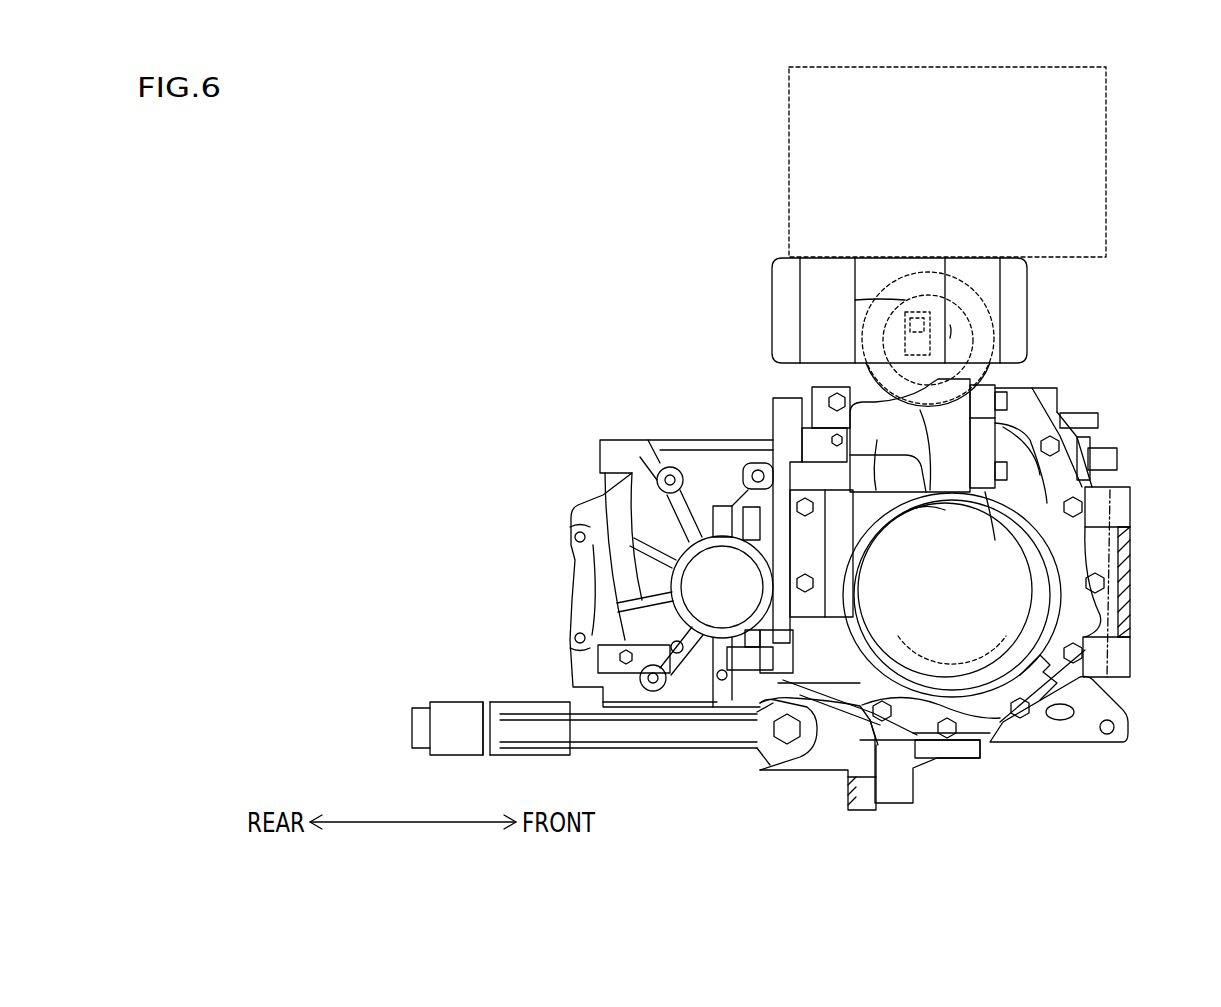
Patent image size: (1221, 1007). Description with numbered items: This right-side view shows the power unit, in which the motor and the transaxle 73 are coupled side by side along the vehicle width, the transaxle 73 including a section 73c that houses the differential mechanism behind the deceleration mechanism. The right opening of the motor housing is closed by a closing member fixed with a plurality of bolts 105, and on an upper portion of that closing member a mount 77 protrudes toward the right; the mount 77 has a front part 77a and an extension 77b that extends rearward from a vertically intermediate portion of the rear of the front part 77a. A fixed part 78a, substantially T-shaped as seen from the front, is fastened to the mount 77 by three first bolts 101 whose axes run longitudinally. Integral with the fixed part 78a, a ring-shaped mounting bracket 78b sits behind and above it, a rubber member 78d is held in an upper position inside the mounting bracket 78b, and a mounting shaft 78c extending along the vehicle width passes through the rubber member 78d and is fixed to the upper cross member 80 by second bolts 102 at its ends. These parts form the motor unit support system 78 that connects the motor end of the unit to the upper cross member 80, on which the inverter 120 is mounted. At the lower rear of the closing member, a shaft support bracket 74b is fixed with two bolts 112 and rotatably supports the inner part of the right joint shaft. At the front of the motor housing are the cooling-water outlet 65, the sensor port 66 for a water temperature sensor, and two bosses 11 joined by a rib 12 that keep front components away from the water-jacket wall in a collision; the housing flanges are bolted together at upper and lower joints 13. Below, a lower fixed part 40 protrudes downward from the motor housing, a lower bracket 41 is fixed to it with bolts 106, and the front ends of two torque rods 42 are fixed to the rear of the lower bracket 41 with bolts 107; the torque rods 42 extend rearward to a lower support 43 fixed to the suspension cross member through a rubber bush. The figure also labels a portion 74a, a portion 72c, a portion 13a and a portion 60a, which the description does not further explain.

The inverter 120 is at (982, 140).
The upper cross member 80 is at (1018, 280).
The motor unit support system 78 is at (1025, 385).
The fixed part 78a is at (993, 500).
The mounting bracket 78b is at (1000, 312).
The mounting shaft 78c is at (912, 355).
The rubber member 78d is at (990, 312).
The second bolts 102 is at (950, 340).
The first bolts 101 is at (1000, 384).
The shaft support bracket 74b is at (762, 435).
The first mounting portion 74a is at (993, 735).
The transaxle 73 is at (671, 526).
The section housing the differential mechanism 73c is at (617, 426).
The bolts 112 is at (675, 628).
The mount 77 is at (962, 578).
The front part 77a is at (948, 500).
The extension 77b is at (878, 492).
The bolts 105 is at (970, 682).
The outlet 65 is at (1103, 460).
The sensor port 66 is at (1107, 500).
The bosses 11 is at (1130, 505).
The rib 12 is at (1130, 562).
The case mounting portion 72c is at (1097, 647).
The joints 13 is at (1045, 752).
The engine hanger arm 13a is at (1087, 745).
The lower fixed part 40 is at (910, 787).
The case lower portion 60a is at (960, 757).
The lower bracket 41 is at (807, 763).
The bolts 107 is at (747, 748).
The bolts 106 is at (840, 785).
The torque rods 42 is at (624, 735).
The lower support 43 is at (490, 703).